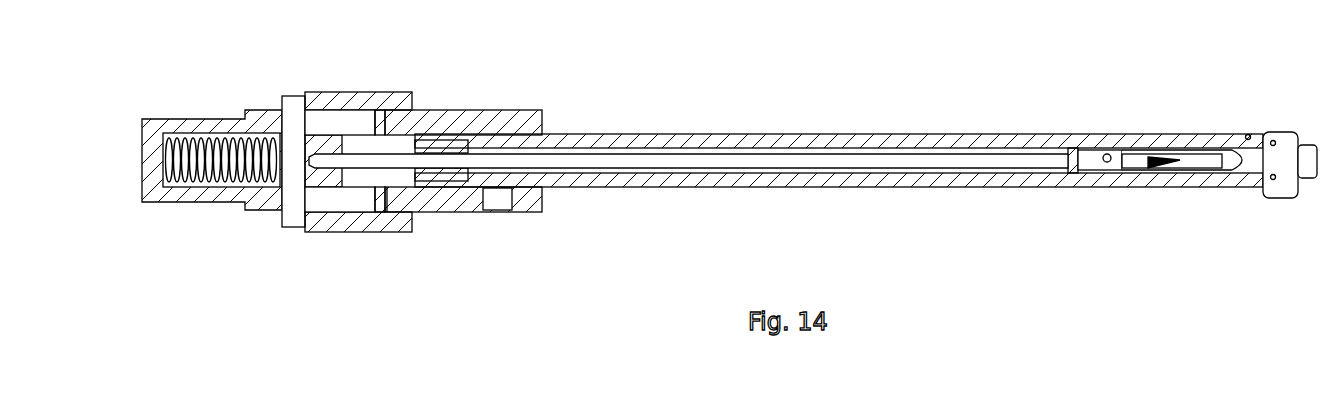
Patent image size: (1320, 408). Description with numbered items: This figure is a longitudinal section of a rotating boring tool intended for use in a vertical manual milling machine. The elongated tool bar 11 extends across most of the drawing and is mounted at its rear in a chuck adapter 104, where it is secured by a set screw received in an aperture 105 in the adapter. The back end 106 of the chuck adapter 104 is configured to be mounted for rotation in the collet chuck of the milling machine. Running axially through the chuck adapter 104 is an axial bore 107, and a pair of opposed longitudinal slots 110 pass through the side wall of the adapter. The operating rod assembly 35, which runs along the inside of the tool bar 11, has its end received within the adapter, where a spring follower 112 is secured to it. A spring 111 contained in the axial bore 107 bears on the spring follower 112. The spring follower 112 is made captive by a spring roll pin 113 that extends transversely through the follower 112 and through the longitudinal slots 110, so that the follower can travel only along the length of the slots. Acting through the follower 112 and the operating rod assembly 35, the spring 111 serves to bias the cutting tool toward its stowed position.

The boring bar body 11 is at (957, 133).
The operating rod assembly 35 is at (628, 157).
The chuck adapter 104 is at (482, 110).
The aperture 105 is at (502, 208).
The back end 106 is at (160, 203).
The axial bore 107 is at (409, 215).
The longitudinal slots 110 is at (325, 93).
The spring 111 is at (223, 203).
The spring follower 112 is at (372, 117).
The spring pin 113 is at (292, 94).